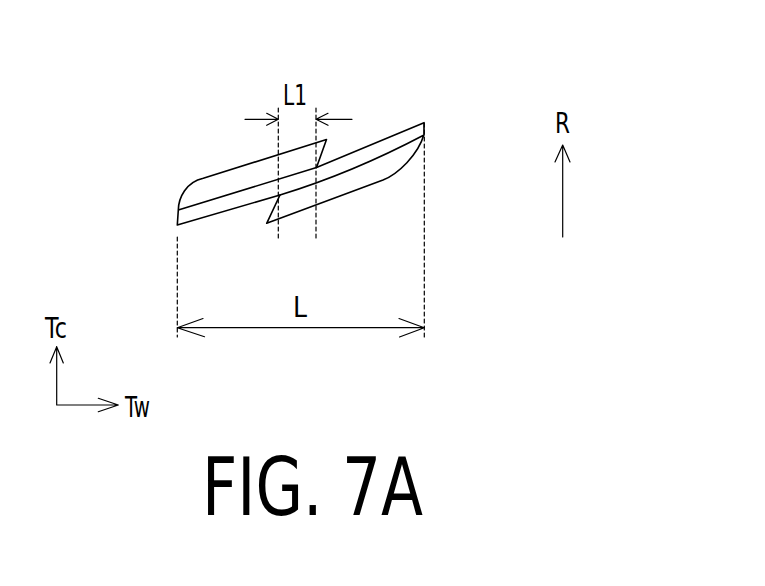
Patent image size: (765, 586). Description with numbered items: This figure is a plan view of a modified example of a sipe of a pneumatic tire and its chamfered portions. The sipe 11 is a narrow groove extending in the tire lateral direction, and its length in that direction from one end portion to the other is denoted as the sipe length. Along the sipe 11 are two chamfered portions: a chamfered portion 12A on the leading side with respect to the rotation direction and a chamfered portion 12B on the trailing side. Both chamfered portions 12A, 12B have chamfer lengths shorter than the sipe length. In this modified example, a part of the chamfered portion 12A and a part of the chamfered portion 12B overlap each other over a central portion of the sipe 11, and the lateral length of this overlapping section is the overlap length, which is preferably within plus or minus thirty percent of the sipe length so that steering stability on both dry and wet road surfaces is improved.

The sipe 11 is at (315, 121).
The chamfered portion 12A is at (235, 185).
The chamfered portion 12B is at (370, 175).